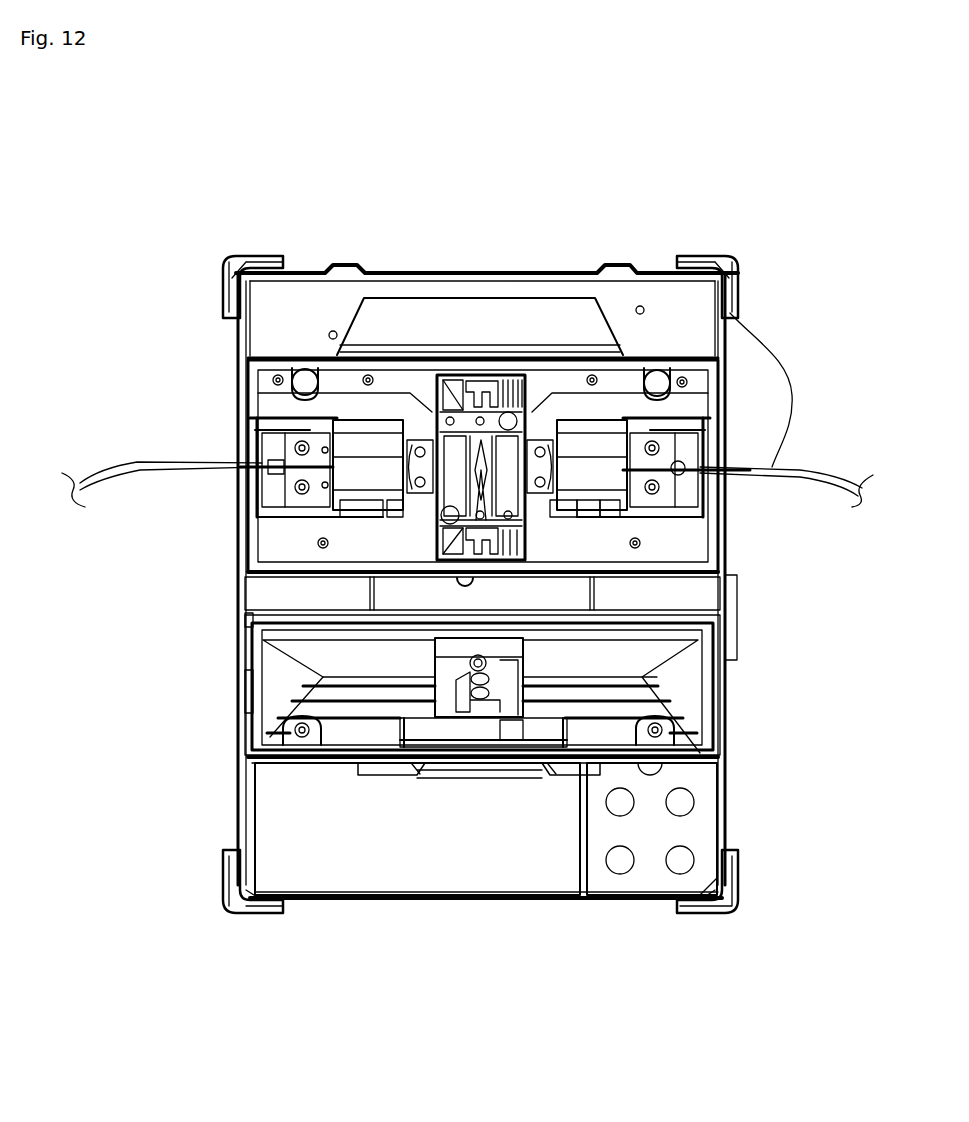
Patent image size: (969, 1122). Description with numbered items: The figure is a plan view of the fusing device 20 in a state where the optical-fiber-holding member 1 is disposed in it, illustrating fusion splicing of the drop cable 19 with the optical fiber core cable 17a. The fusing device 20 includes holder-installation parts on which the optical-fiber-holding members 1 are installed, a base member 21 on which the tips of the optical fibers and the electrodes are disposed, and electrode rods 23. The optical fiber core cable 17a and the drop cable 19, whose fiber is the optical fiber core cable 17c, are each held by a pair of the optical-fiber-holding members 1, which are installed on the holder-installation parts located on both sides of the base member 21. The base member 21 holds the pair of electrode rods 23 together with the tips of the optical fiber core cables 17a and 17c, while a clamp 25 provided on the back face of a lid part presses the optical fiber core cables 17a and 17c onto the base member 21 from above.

The fusing device 20 is at (365, 198).
The electrode rods 23 is at (459, 405).
The drop cable 19 is at (218, 465).
The optical fiber core cable 17a is at (727, 258).
The optical fiber core cable 17c is at (262, 553).
The optical-fiber-holding member 1 is at (665, 490).
The base member 21 is at (627, 517).
The clamp 25 is at (690, 750).